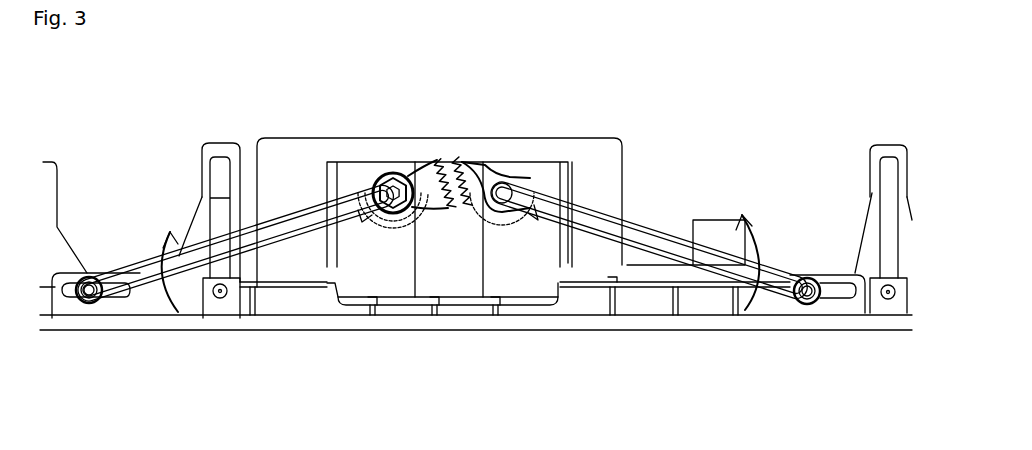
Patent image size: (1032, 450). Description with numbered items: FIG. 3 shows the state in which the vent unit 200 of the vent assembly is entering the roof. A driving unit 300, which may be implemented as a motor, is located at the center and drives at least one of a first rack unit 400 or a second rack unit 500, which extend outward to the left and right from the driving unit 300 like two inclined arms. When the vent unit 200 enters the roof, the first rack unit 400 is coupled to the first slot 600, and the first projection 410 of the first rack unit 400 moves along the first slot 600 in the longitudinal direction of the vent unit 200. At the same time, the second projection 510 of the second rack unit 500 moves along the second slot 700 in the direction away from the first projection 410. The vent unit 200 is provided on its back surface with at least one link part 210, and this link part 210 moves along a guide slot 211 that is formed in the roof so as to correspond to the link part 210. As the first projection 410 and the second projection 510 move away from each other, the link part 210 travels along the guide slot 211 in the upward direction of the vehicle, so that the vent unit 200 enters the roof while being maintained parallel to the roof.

The vent unit 200 is at (657, 330).
The link part 210 is at (217, 303).
The guide slot 211 is at (220, 160).
The driving unit 300 is at (452, 138).
The first rack unit 400 is at (312, 212).
The first projection 410 is at (89, 303).
The second rack unit 500 is at (590, 178).
The second projection 510 is at (810, 305).
The first slot 600 is at (70, 300).
The second slot 700 is at (845, 302).